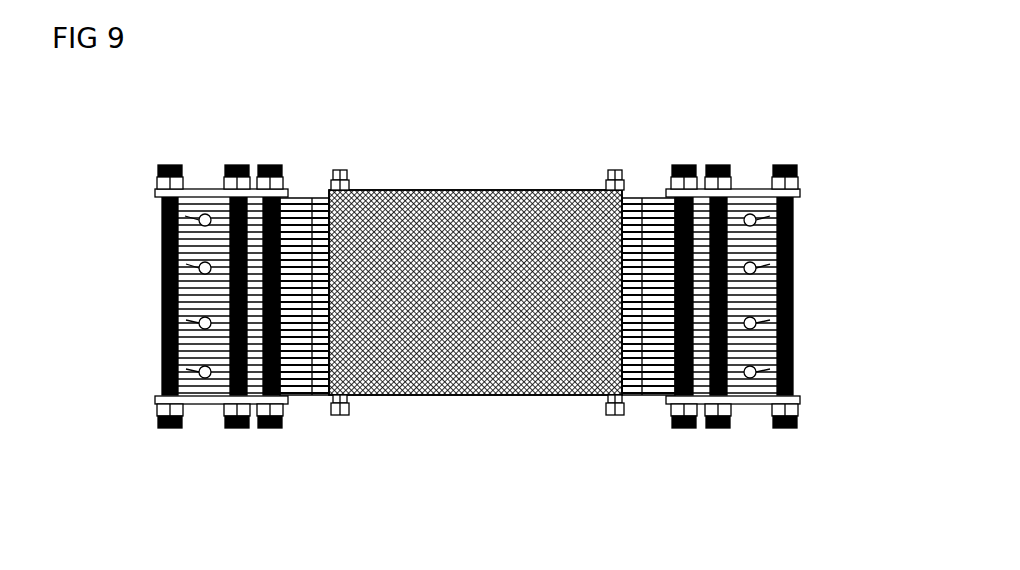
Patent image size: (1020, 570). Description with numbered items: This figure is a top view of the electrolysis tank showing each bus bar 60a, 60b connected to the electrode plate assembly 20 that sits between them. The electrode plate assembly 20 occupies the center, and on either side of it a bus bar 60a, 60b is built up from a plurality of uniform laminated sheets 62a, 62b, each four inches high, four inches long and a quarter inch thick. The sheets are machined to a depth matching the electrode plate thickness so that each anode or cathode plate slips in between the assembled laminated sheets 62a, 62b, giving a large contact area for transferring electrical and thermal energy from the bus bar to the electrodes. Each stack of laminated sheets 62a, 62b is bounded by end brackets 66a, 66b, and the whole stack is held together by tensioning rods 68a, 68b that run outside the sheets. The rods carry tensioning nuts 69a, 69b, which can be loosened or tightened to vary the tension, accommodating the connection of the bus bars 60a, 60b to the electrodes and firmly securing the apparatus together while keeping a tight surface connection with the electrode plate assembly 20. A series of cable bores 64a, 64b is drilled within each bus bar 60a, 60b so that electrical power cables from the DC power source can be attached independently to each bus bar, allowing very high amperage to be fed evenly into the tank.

The electrode plate assembly 20 is at (477, 375).
The bus bar 60a is at (795, 292).
The bus bar 60b is at (157, 293).
The laminated sheet 62a is at (795, 224).
The laminated sheet 62b is at (160, 248).
The cable bore 64a is at (795, 260).
The cable bore 64b is at (160, 212).
The end bracket 66a is at (753, 179).
The end bracket 66b is at (210, 180).
The tensioning rod 68a is at (795, 334).
The tensioning rod 68b is at (157, 352).
The tensioning nut 69a is at (800, 407).
The tensioning nut 69b is at (152, 407).